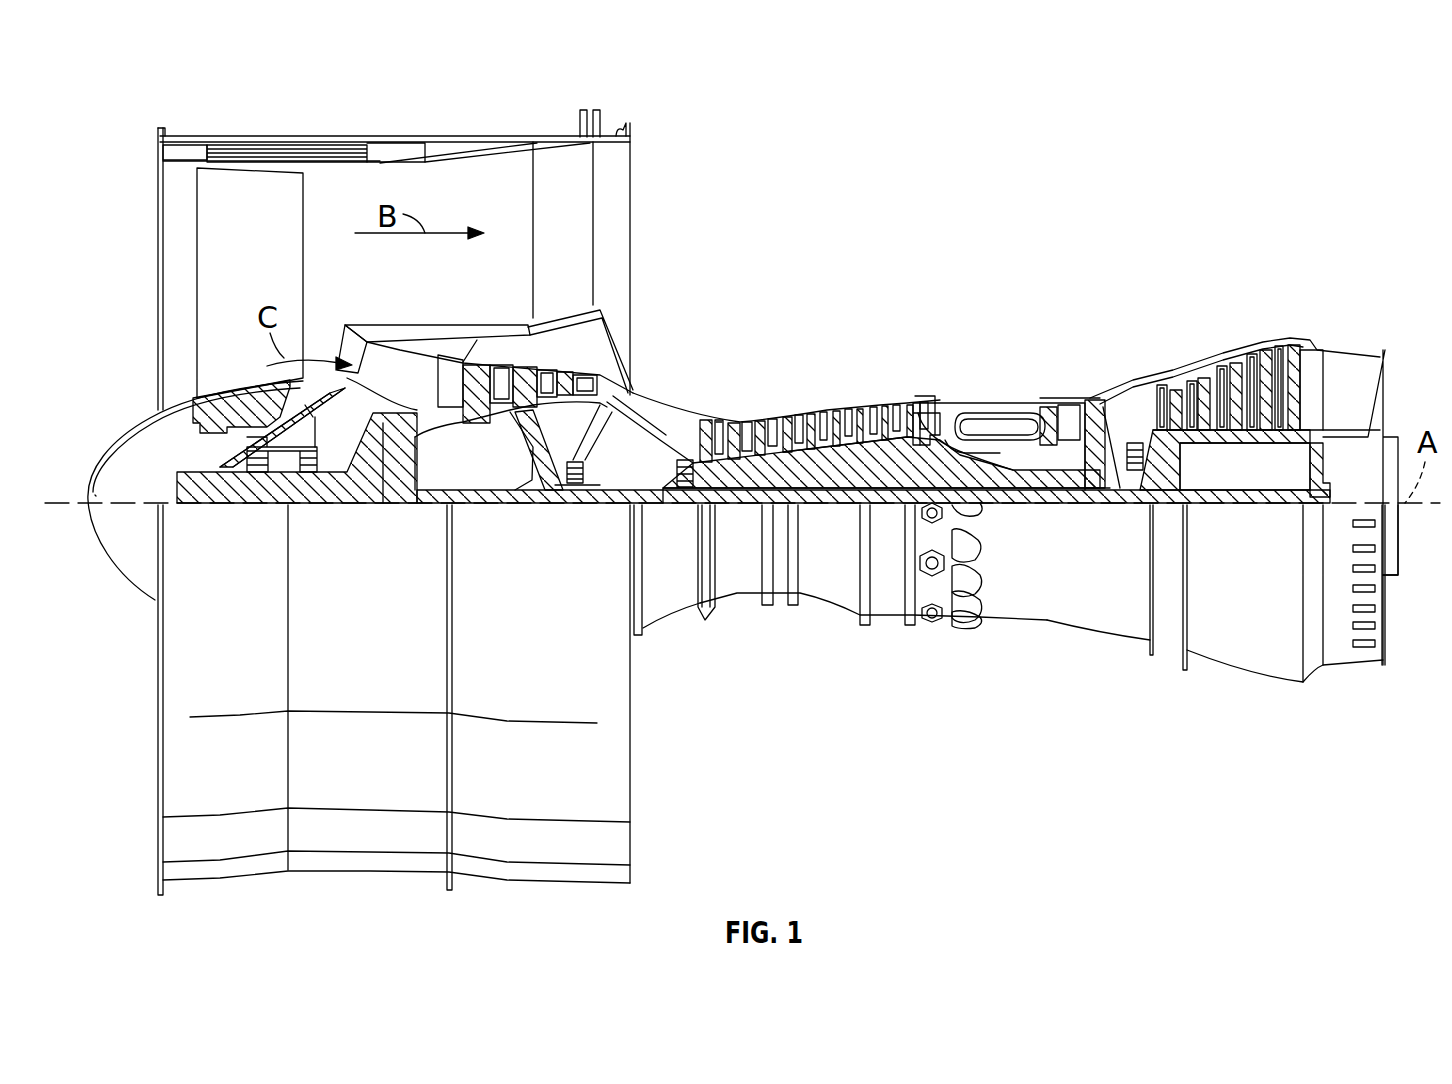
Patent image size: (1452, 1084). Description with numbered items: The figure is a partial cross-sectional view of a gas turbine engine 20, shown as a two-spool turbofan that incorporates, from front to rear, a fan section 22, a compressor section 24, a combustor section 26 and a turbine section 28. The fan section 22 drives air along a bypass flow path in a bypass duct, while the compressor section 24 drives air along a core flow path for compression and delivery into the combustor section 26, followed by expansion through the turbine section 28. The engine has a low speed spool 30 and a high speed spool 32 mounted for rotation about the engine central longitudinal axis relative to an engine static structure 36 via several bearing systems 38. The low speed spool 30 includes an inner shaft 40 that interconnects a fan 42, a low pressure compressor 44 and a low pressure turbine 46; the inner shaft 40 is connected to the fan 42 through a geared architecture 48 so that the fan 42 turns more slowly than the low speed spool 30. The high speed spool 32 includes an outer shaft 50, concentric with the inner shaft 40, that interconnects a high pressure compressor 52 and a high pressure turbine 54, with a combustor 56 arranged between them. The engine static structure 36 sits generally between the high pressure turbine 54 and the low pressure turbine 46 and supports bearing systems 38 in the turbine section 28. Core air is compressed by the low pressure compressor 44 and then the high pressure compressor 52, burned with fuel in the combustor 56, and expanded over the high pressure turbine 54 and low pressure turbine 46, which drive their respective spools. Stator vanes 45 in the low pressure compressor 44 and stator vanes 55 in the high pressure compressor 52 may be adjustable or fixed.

The gas turbine engine 20 is at (1206, 168).
The fan section 22 is at (426, 112).
The compressor section 24 is at (825, 360).
The combustor section 26 is at (985, 358).
The turbine section 28 is at (1138, 340).
The low speed spool 30 is at (845, 513).
The high speed spool 32 is at (912, 430).
The engine static structure 36 is at (883, 630).
The bearing systems 38 is at (257, 467).
The inner shaft 40 is at (650, 505).
The fan 42 is at (277, 268).
The low pressure compressor 44 is at (545, 383).
The stator vanes 45 is at (500, 373).
The low pressure turbine 46 is at (1242, 365).
The geared architecture 48 is at (396, 470).
The outer shaft 50 is at (1025, 495).
The high pressure compressor 52 is at (810, 470).
The high pressure turbine 54 is at (1072, 398).
The stator vanes 55 is at (716, 422).
The combustor 56 is at (997, 425).